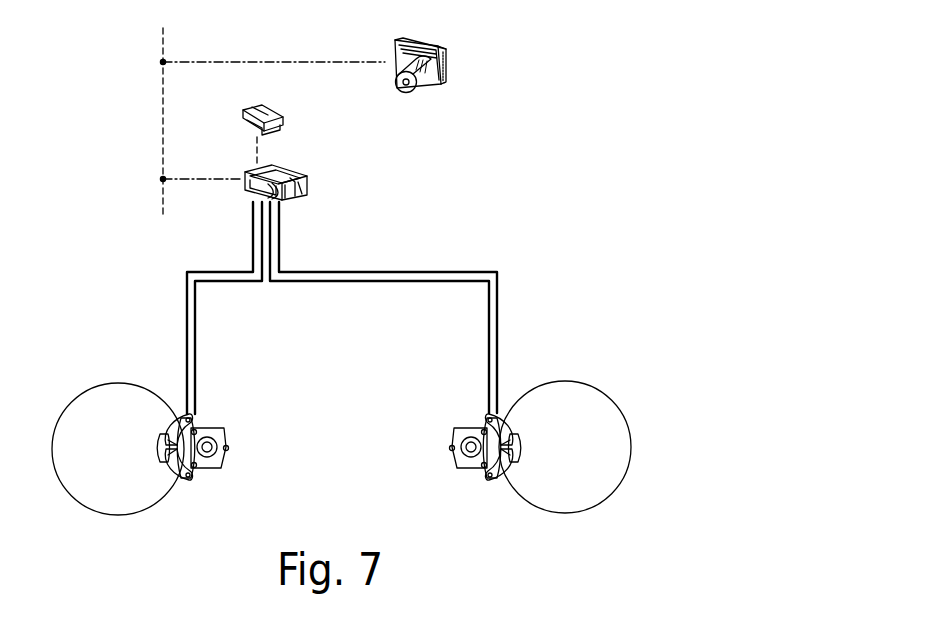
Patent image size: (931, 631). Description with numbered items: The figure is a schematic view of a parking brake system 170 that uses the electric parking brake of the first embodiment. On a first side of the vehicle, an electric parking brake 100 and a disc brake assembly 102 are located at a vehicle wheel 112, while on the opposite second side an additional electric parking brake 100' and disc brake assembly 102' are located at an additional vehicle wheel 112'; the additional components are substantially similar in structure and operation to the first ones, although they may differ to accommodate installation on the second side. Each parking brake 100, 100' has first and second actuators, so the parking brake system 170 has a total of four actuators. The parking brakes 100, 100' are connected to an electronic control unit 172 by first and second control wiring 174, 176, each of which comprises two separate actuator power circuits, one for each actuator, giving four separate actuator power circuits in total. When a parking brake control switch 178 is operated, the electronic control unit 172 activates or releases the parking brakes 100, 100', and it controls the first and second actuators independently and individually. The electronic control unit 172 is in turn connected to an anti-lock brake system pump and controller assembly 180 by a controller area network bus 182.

The electric parking brake 100 is at (252, 420).
The additional electric parking brake 100' is at (428, 430).
The disc brake assembly 102 is at (131, 449).
The additional disc brake assembly 102' is at (550, 444).
The vehicle wheel 112 is at (97, 419).
The additional vehicle wheel 112' is at (583, 424).
The parking brake system 170 is at (494, 158).
The electronic control unit 172 is at (295, 177).
The first control wiring 174 is at (176, 295).
The second control wiring 176 is at (502, 300).
The parking brake control switch 178 is at (270, 109).
The anti-lock brake system pump and controller assembly 180 is at (423, 42).
The controller area network bus 182 is at (163, 92).